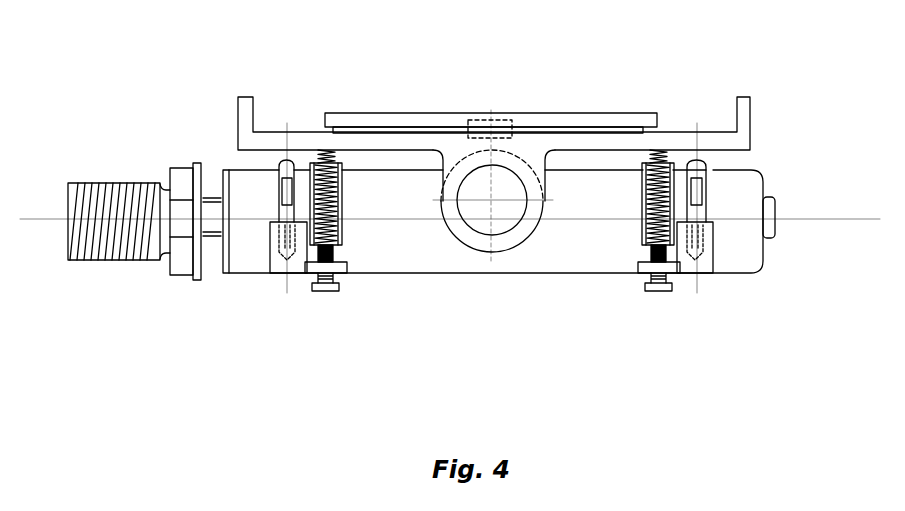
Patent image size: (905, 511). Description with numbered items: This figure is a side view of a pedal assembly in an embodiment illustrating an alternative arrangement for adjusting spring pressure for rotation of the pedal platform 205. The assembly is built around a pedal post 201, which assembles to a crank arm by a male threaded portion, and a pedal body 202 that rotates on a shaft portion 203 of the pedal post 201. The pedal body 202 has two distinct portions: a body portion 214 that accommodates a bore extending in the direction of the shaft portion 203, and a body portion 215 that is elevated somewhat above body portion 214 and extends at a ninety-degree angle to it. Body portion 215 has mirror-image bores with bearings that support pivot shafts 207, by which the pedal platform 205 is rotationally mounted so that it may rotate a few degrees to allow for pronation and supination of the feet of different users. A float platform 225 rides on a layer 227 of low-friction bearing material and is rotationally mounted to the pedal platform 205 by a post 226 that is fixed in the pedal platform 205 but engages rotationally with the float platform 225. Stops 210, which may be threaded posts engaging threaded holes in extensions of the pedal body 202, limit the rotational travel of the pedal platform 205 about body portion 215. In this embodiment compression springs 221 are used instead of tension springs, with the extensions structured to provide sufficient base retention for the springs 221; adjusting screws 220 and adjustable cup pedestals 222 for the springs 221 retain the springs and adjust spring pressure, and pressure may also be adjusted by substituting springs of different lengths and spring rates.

The pedal post 201 is at (180, 150).
The pedal body 202 is at (762, 252).
The shaft portion 203 is at (213, 238).
The pedal platform 205 is at (305, 133).
The pivot shafts 207 is at (457, 210).
The stops 210 is at (278, 192).
The body portion 214 is at (412, 275).
The body portion 215 is at (533, 232).
The adjusting screws 220 is at (323, 295).
The compression springs 221 is at (333, 157).
The adjustable cup pedestals 222 is at (340, 220).
The float platform 225 is at (347, 112).
The post 226 is at (492, 120).
The layer of low-friction bearing material 227 is at (622, 130).